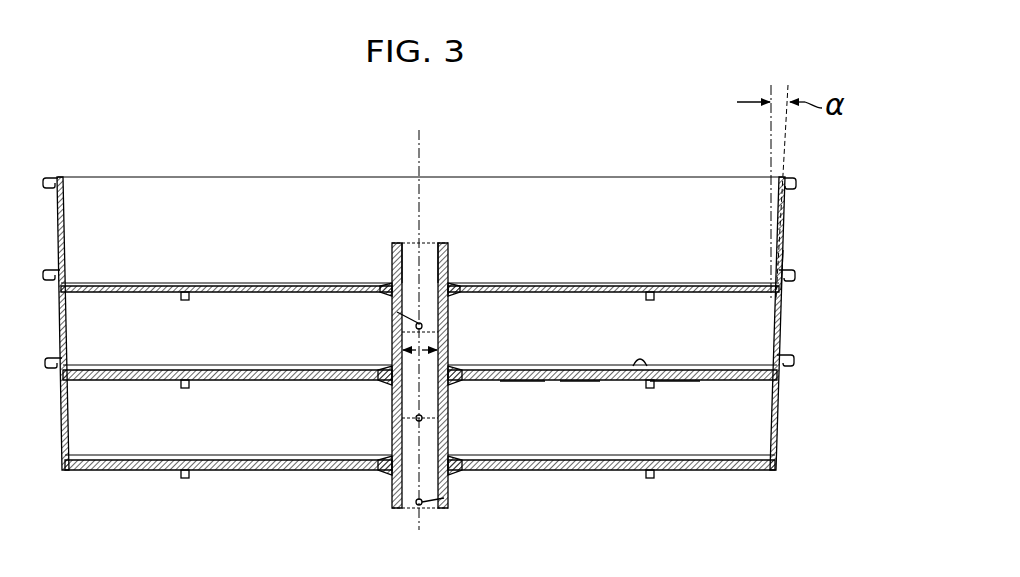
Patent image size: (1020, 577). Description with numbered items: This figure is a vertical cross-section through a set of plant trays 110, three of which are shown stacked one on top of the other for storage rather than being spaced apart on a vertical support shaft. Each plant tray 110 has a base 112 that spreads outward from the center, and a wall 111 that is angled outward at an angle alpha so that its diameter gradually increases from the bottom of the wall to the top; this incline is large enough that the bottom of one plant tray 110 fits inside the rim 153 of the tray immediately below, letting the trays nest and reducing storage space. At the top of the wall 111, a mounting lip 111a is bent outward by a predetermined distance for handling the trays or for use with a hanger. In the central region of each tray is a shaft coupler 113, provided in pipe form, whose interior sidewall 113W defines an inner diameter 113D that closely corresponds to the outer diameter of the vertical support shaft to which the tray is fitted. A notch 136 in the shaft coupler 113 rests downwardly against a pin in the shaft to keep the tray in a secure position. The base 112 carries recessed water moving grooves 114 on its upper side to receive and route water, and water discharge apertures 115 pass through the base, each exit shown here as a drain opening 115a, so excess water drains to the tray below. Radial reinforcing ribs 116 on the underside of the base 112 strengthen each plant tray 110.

The plant tray 110 is at (116, 123).
The wall 111 is at (781, 312).
The mounting lip 111a is at (788, 266).
The base 112 is at (703, 382).
The shaft coupler 113 is at (393, 389).
The interior sidewall 113W is at (438, 268).
The inner diameter 113D is at (447, 358).
The recessed water moving groove 114 is at (577, 382).
The water discharge aperture 115 is at (657, 386).
The projection tip 115a is at (637, 370).
The radial reinforcing rib 116 is at (537, 385).
The notch 136 is at (397, 312).
The rim 153 is at (796, 184).